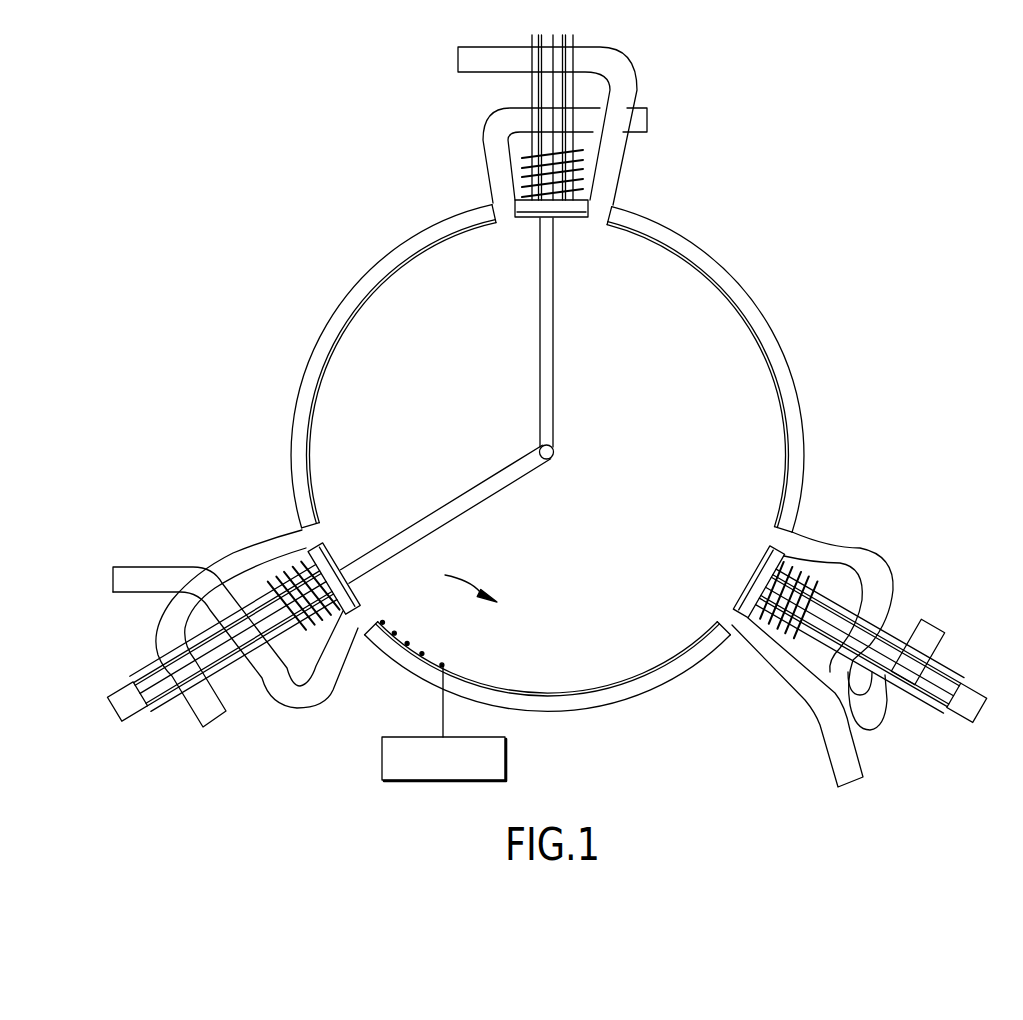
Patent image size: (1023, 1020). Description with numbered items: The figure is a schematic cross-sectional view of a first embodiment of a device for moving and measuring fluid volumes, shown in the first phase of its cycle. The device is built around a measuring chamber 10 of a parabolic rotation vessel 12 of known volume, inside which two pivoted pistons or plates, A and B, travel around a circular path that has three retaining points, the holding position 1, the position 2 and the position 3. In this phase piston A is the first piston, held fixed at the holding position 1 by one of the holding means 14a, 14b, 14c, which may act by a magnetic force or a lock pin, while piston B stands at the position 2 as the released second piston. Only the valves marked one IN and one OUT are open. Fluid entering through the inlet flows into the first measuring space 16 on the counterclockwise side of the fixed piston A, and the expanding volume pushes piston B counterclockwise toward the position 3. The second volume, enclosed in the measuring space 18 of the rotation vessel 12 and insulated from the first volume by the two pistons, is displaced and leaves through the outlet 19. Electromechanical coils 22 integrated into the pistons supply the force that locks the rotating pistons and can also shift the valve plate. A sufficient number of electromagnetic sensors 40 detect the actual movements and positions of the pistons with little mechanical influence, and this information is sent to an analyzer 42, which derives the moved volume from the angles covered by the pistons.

The holding position 1 is at (568, 155).
The position 2 is at (231, 633).
The position 3 is at (857, 649).
The measuring chamber 10 is at (723, 293).
The rotation vessel 12 is at (762, 352).
The holding means 14a is at (598, 157).
The holding means 14b is at (270, 573).
The holding means 14c is at (787, 648).
The first measuring space 16 is at (383, 376).
The measuring space 18 is at (740, 400).
The outlet 19 is at (598, 208).
The electromechanical coils 22 is at (803, 647).
The sensors 40 is at (422, 657).
The analyzer 42 is at (505, 755).